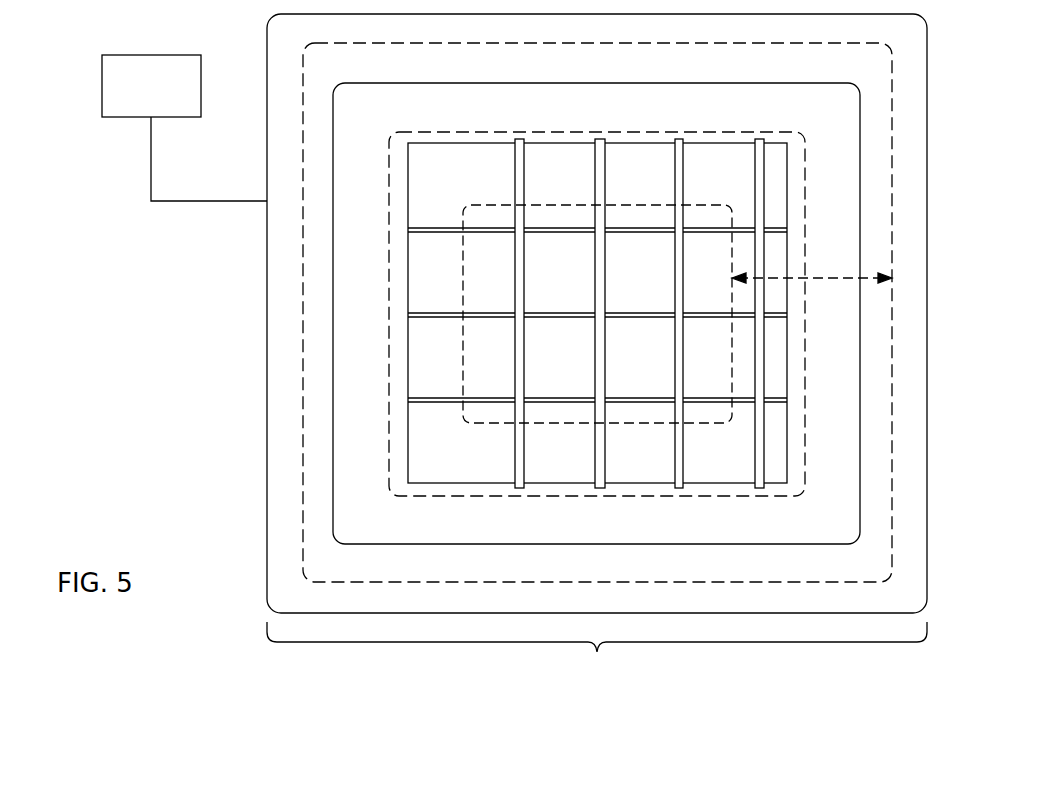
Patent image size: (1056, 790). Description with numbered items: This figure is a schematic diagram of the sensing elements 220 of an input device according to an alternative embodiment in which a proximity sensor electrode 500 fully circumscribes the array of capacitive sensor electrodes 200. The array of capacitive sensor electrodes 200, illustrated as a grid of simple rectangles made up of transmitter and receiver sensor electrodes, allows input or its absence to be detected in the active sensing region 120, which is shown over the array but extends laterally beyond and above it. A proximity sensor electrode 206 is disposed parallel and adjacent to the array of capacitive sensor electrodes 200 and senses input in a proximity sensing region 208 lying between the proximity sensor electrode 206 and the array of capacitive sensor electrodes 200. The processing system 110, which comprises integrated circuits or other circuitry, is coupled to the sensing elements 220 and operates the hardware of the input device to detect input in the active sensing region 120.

The processing system 110 is at (166, 98).
The active sensing region 120 is at (642, 131).
The array of capacitive sensor electrodes 200 is at (730, 174).
The proximity sensor electrode 206 is at (928, 104).
The proximity sensing region 208 is at (832, 272).
The sensing elements 220 is at (597, 656).
The proximity sensor electrode 500 is at (922, 534).